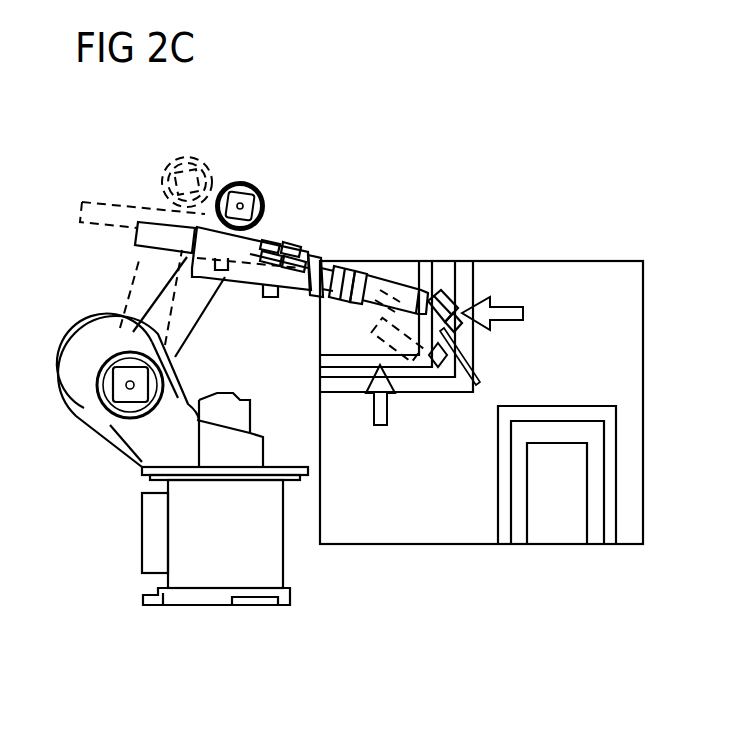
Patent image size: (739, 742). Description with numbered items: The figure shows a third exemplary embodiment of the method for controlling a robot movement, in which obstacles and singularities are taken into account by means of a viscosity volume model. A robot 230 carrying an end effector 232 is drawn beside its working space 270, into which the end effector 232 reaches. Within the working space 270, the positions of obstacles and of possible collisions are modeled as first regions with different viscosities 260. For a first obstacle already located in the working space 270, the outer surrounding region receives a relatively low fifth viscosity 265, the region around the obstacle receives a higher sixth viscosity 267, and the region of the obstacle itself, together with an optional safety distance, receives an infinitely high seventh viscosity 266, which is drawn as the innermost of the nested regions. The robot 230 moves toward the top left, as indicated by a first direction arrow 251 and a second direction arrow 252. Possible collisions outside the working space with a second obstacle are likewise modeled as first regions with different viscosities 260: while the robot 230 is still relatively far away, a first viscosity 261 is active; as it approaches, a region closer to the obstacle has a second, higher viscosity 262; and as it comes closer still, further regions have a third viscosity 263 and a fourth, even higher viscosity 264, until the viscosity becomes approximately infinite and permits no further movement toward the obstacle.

The robot 230 is at (282, 243).
The end effector 232 is at (468, 386).
The first direction arrow 251 is at (380, 426).
The second direction arrow 252 is at (510, 321).
The first regions with different viscosities 260 is at (473, 133).
The first viscosity 261 is at (472, 261).
The second viscosity 262 is at (456, 261).
The third viscosity 263 is at (423, 261).
The fourth viscosity 264 is at (382, 261).
The fifth viscosity 265 is at (503, 544).
The seventh viscosity 266 is at (557, 544).
The sixth viscosity 267 is at (596, 544).
The working space 270 is at (625, 260).